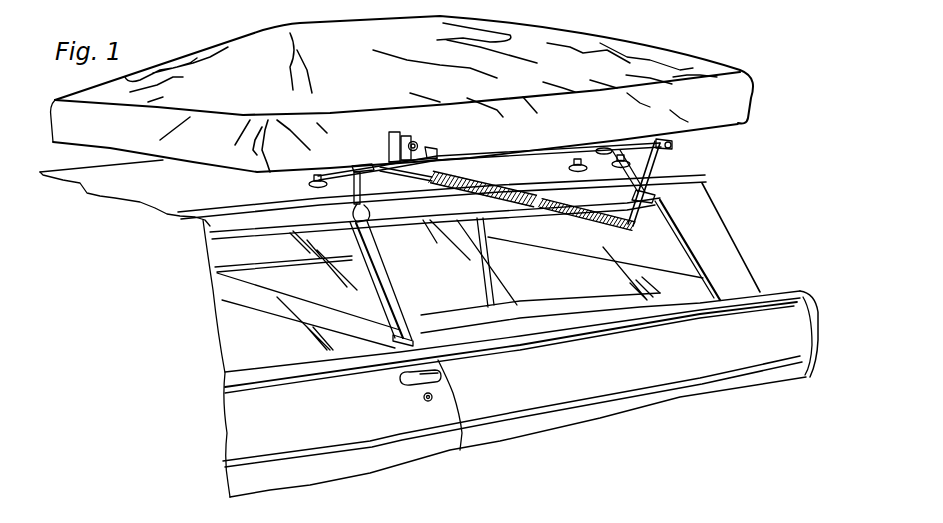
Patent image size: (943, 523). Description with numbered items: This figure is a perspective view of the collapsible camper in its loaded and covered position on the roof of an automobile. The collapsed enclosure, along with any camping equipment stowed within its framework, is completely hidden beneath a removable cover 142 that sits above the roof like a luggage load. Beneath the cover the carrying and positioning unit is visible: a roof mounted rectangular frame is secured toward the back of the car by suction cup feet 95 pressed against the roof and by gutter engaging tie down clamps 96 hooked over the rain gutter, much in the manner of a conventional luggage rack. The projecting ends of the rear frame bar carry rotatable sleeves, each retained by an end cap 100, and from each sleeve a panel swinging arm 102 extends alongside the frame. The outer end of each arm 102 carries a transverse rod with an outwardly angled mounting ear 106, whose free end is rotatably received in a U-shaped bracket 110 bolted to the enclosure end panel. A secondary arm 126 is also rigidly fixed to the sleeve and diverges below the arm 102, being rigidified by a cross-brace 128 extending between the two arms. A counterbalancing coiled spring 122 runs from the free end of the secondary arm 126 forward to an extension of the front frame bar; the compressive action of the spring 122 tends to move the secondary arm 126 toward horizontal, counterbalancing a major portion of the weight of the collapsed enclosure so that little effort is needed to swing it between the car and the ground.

The removable cover 142 is at (639, 58).
The secondary arm 126 is at (98, 178).
The arm 102 is at (583, 127).
The end cap 100 is at (674, 146).
The U-shaped bracket 110 is at (400, 128).
The mounting ear 106 is at (437, 154).
The counterbalancing coiled spring 122 is at (535, 210).
The cross-brace 128 is at (630, 176).
The suction cup feet 95 is at (307, 187).
The gutter engaging tie down clamp 96 is at (365, 218).